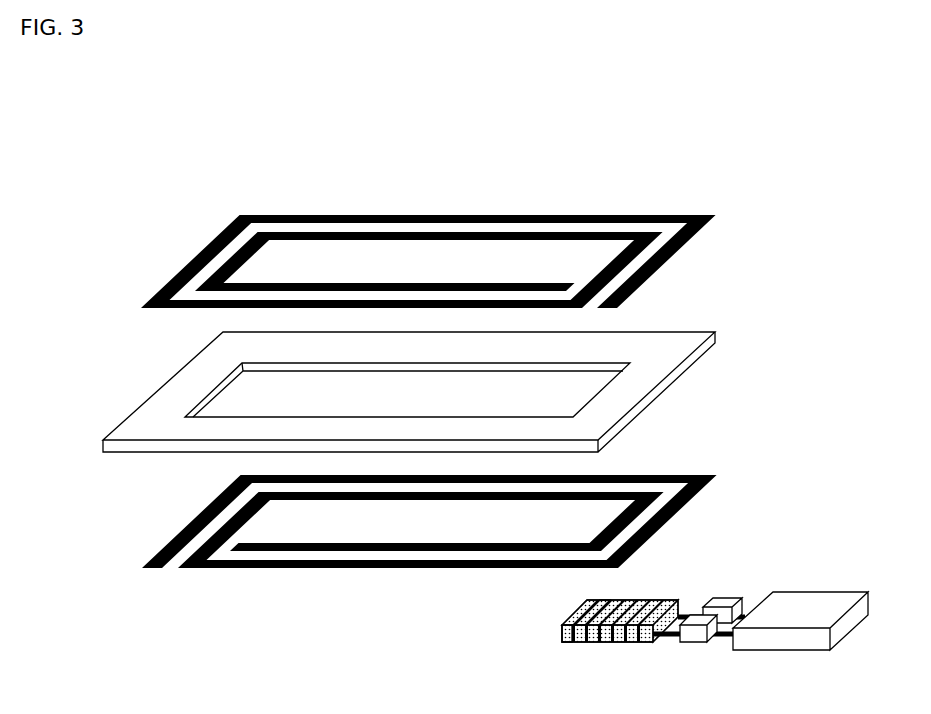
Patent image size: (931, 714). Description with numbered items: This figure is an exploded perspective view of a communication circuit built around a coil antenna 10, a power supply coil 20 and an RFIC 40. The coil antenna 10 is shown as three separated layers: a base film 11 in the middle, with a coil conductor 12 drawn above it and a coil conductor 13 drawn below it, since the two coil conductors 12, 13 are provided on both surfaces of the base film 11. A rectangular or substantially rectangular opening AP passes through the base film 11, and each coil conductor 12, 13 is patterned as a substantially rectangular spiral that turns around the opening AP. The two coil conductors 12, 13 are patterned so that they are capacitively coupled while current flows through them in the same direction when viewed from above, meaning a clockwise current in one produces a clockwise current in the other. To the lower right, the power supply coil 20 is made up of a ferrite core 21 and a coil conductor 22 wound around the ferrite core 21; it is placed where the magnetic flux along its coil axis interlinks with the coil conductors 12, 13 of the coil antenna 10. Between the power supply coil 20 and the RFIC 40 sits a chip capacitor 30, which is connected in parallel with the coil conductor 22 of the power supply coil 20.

The coil antenna 10 is at (95, 172).
The base film 11 is at (682, 341).
The coil conductor 12 is at (682, 216).
The coil conductor 13 is at (680, 476).
The opening AP is at (242, 396).
The power supply coil 20 is at (646, 592).
The ferrite core 21 is at (566, 631).
The coil conductor 22 is at (590, 606).
The chip capacitor 30 is at (717, 600).
The RFIC 40 is at (808, 600).